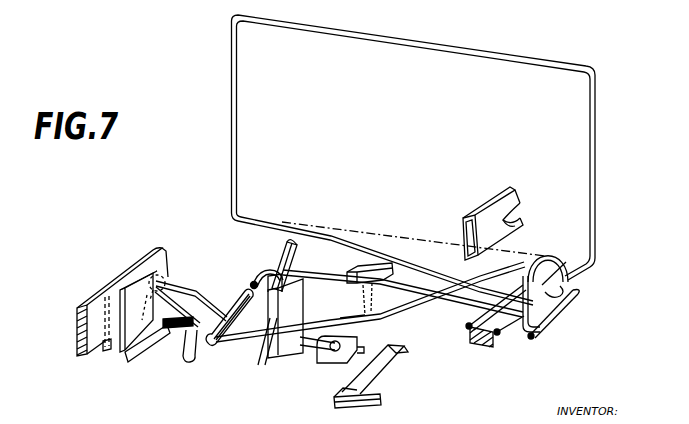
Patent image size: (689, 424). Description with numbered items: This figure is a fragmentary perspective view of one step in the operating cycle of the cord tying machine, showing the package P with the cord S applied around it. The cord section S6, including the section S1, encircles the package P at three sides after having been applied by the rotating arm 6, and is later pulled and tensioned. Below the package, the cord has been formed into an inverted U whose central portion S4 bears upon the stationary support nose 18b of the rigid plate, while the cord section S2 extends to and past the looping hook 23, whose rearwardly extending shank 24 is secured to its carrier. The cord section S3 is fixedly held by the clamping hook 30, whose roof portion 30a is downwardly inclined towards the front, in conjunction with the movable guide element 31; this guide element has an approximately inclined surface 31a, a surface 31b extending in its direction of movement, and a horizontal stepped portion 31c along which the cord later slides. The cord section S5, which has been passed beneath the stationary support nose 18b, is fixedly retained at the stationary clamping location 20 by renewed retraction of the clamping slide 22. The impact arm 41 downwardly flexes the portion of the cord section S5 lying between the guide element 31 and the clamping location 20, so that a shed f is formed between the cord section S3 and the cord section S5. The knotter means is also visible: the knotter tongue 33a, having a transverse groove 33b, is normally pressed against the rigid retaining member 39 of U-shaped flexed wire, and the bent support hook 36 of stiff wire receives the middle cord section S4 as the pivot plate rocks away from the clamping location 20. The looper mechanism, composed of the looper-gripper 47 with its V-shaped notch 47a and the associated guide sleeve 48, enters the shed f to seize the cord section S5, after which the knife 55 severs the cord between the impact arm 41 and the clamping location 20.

The package P is at (398, 160).
The cord section S1 is at (231, 124).
The cord section S6 is at (432, 45).
The cord section S2 is at (308, 236).
The cord section S3 is at (413, 232).
The cord section S4 is at (540, 258).
The cord section S5 is at (262, 356).
The cord S is at (216, 304).
The guide sleeve 48 is at (490, 208).
The looper-gripper 47 is at (522, 210).
The V-shaped notch 47a is at (516, 228).
The stationary support nose 18b is at (386, 263).
The retaining member 39 is at (567, 263).
The groove 33b is at (566, 290).
The support hook 36 is at (558, 303).
The knotter tongue 33a is at (483, 348).
The guide element 31 is at (295, 298).
The inclined surface 31a is at (253, 283).
The surface 31b is at (262, 340).
The horizontal stepped portion 31c is at (312, 337).
The clamping hook 30 is at (286, 250).
The roof portion 30a is at (288, 246).
The shed f is at (410, 294).
The impact arm 41 is at (192, 362).
The clamping slide 22 is at (158, 250).
The clamping location 20 is at (167, 283).
The knife 55 is at (173, 332).
The arm 6 is at (331, 360).
The looping hook 23 is at (380, 400).
The shank 24 is at (402, 350).